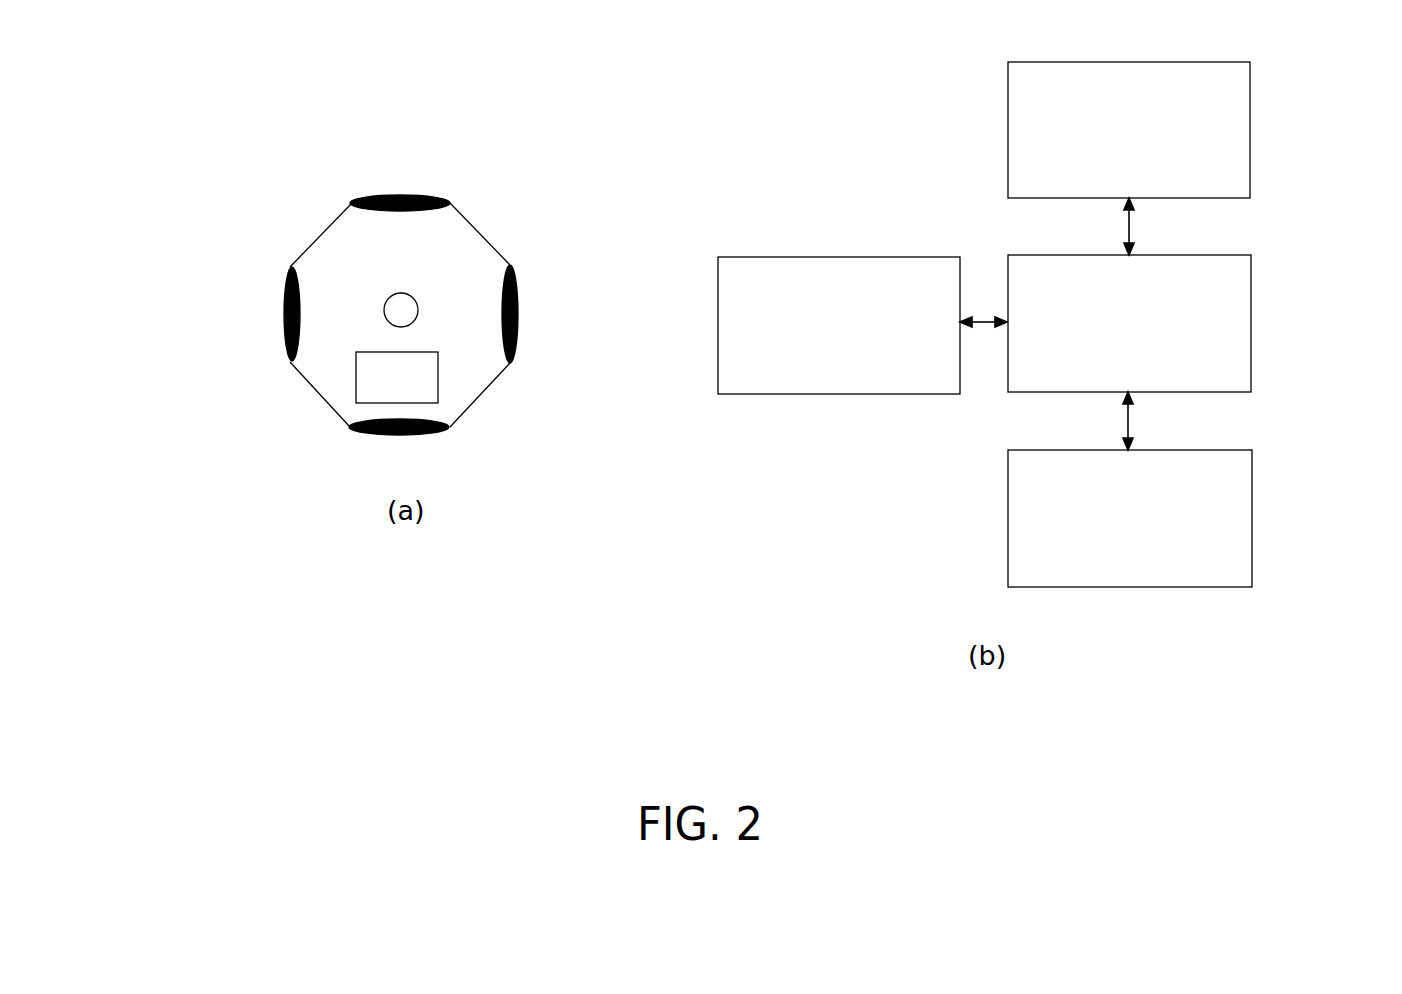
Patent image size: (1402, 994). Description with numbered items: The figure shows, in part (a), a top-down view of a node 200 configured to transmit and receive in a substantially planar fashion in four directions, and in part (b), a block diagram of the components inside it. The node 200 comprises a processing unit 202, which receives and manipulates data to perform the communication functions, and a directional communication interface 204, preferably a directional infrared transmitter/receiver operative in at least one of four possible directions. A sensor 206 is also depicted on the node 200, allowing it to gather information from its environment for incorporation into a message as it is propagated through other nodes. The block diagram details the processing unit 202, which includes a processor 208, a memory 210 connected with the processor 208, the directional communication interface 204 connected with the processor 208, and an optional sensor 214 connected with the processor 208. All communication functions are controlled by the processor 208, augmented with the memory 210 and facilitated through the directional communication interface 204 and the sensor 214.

The node 200 is at (425, 300).
The processing unit 202 is at (363, 395).
The directional communication interface 204 is at (517, 300).
The sensor 206 is at (396, 317).
The processor 208 is at (1218, 327).
The memory 210 is at (1215, 518).
The sensor 214 is at (878, 387).